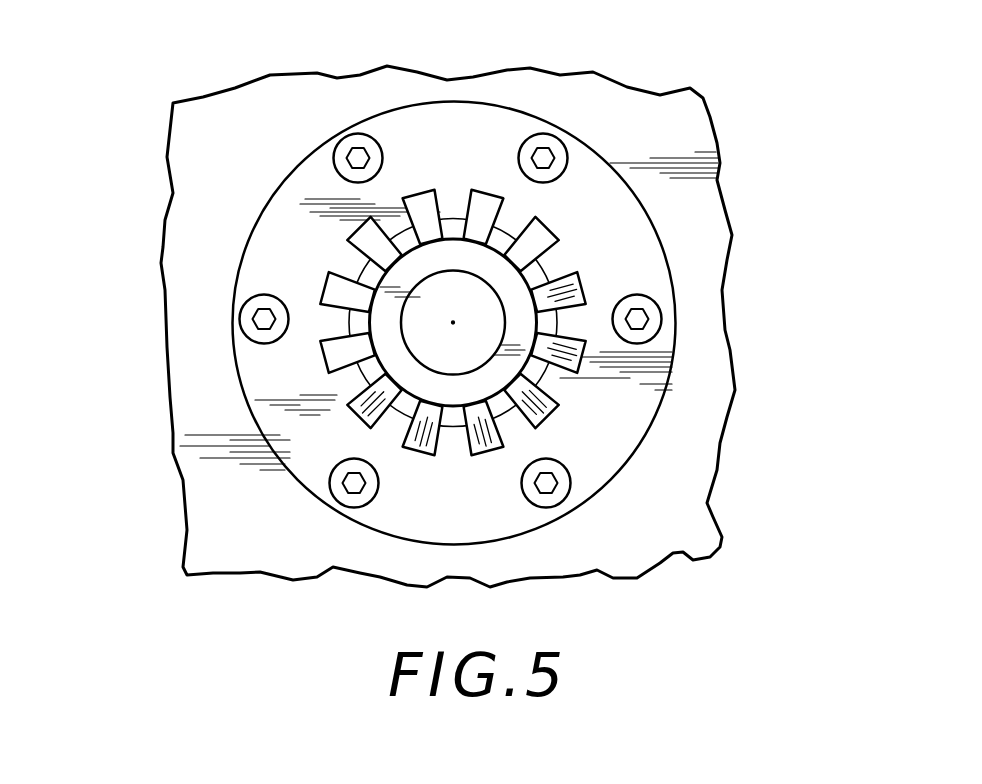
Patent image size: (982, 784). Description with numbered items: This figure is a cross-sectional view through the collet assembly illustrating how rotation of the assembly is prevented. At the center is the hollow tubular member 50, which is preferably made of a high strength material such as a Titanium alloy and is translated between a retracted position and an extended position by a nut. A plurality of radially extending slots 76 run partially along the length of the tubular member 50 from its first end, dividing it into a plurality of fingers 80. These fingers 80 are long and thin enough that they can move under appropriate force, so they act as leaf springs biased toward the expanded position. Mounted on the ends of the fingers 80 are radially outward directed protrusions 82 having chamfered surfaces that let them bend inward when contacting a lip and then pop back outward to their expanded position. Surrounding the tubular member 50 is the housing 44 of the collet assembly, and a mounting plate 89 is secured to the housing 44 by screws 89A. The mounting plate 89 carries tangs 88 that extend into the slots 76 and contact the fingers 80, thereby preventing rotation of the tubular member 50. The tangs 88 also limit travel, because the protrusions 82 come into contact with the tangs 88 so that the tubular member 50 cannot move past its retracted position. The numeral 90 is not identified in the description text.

The housing 44 is at (710, 493).
The hollow tubular member 50 is at (432, 227).
The radially extending slots 76 is at (343, 323).
The fingers 80 is at (560, 257).
The radially outward directed protrusions 82 is at (548, 238).
The tangs 88 is at (357, 262).
The mounting plate 89 is at (370, 533).
The screws 89A is at (568, 512).
The tab 90 is at (363, 377).